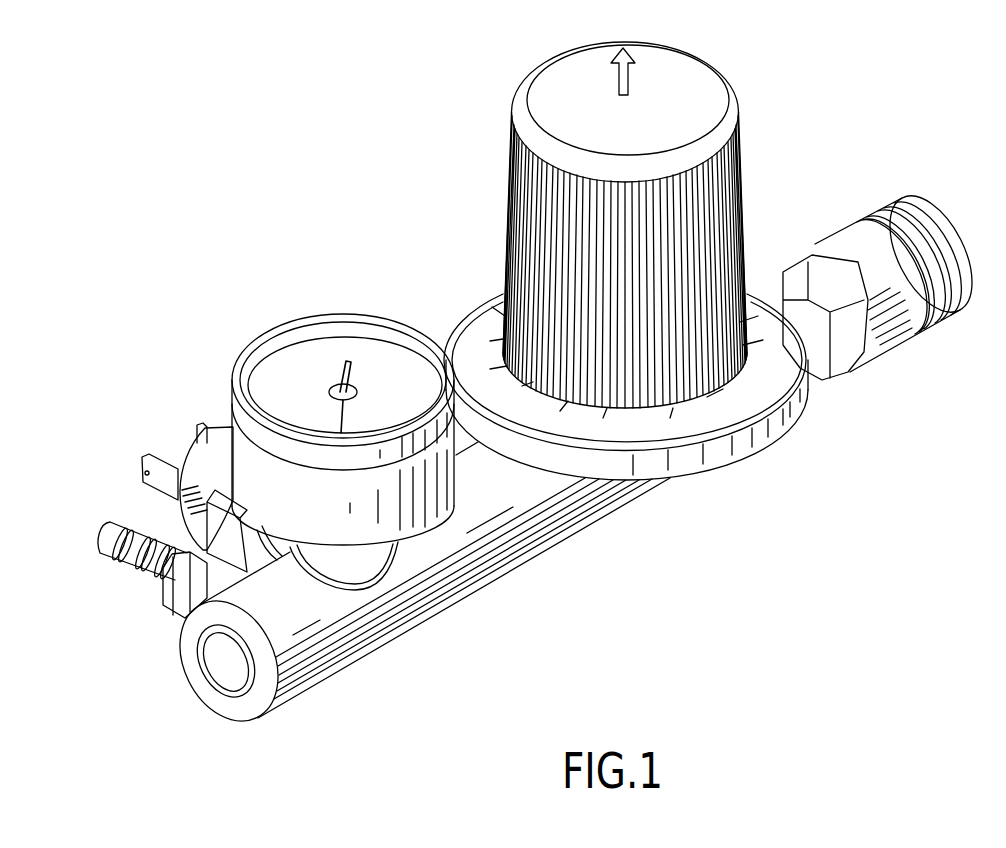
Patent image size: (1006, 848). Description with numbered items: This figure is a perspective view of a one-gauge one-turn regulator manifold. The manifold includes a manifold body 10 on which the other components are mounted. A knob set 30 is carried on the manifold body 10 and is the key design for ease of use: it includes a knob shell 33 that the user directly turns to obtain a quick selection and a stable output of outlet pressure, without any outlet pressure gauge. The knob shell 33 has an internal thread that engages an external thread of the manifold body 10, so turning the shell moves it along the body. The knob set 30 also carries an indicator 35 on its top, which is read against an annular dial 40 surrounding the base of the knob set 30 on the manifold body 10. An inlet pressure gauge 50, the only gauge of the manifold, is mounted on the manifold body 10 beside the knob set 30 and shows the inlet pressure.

The manifold body 10 is at (511, 563).
The knob set 30 is at (578, 210).
The knob shell 33 is at (525, 245).
The indicator 35 is at (628, 80).
The annular dial 40 is at (750, 447).
The inlet pressure gauge 50 is at (256, 323).